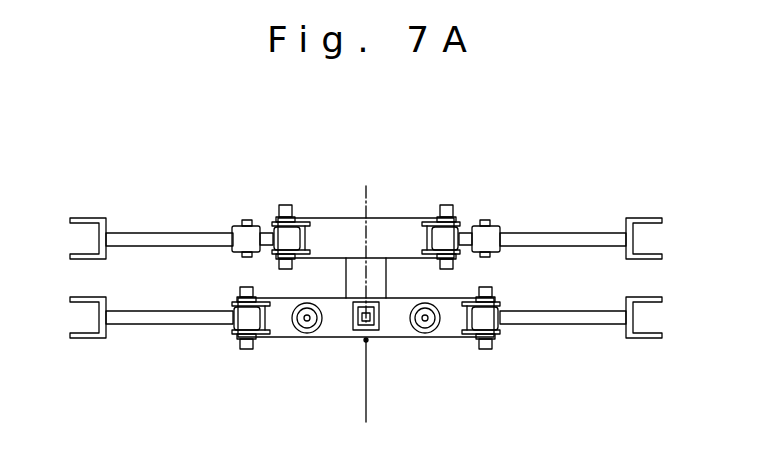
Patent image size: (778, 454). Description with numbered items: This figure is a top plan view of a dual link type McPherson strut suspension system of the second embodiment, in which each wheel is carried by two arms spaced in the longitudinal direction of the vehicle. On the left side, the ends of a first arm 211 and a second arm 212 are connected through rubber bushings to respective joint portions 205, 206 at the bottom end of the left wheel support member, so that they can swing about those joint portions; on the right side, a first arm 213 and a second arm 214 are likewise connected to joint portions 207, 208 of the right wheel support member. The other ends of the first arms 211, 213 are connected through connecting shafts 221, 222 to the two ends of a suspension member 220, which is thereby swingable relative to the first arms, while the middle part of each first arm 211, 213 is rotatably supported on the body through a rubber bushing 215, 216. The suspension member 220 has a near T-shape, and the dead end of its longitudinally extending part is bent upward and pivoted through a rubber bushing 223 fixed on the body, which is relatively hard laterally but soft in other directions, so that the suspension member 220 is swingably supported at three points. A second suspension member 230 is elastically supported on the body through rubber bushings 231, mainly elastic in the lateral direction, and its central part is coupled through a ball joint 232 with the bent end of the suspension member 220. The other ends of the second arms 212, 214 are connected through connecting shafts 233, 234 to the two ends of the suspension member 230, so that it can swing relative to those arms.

The joint portion 205 is at (92, 217).
The joint portion 206 is at (92, 339).
The joint portion 207 is at (642, 217).
The joint portion 208 is at (643, 338).
The first arm 211 is at (153, 238).
The second arm 212 is at (153, 325).
The first arm 213 is at (563, 232).
The second arm 214 is at (563, 324).
The rubber bushing 215 is at (247, 220).
The rubber bushing 216 is at (485, 220).
The suspension member 220 is at (378, 225).
The connecting shaft 221 is at (285, 205).
The connecting shaft 222 is at (446, 205).
The rubber bushing 223 is at (367, 341).
The suspension member 230 is at (450, 337).
The rubber bushing 231 is at (307, 333).
The ball joint 232 is at (357, 330).
The connecting shaft 233 is at (247, 349).
The connecting shaft 234 is at (485, 349).